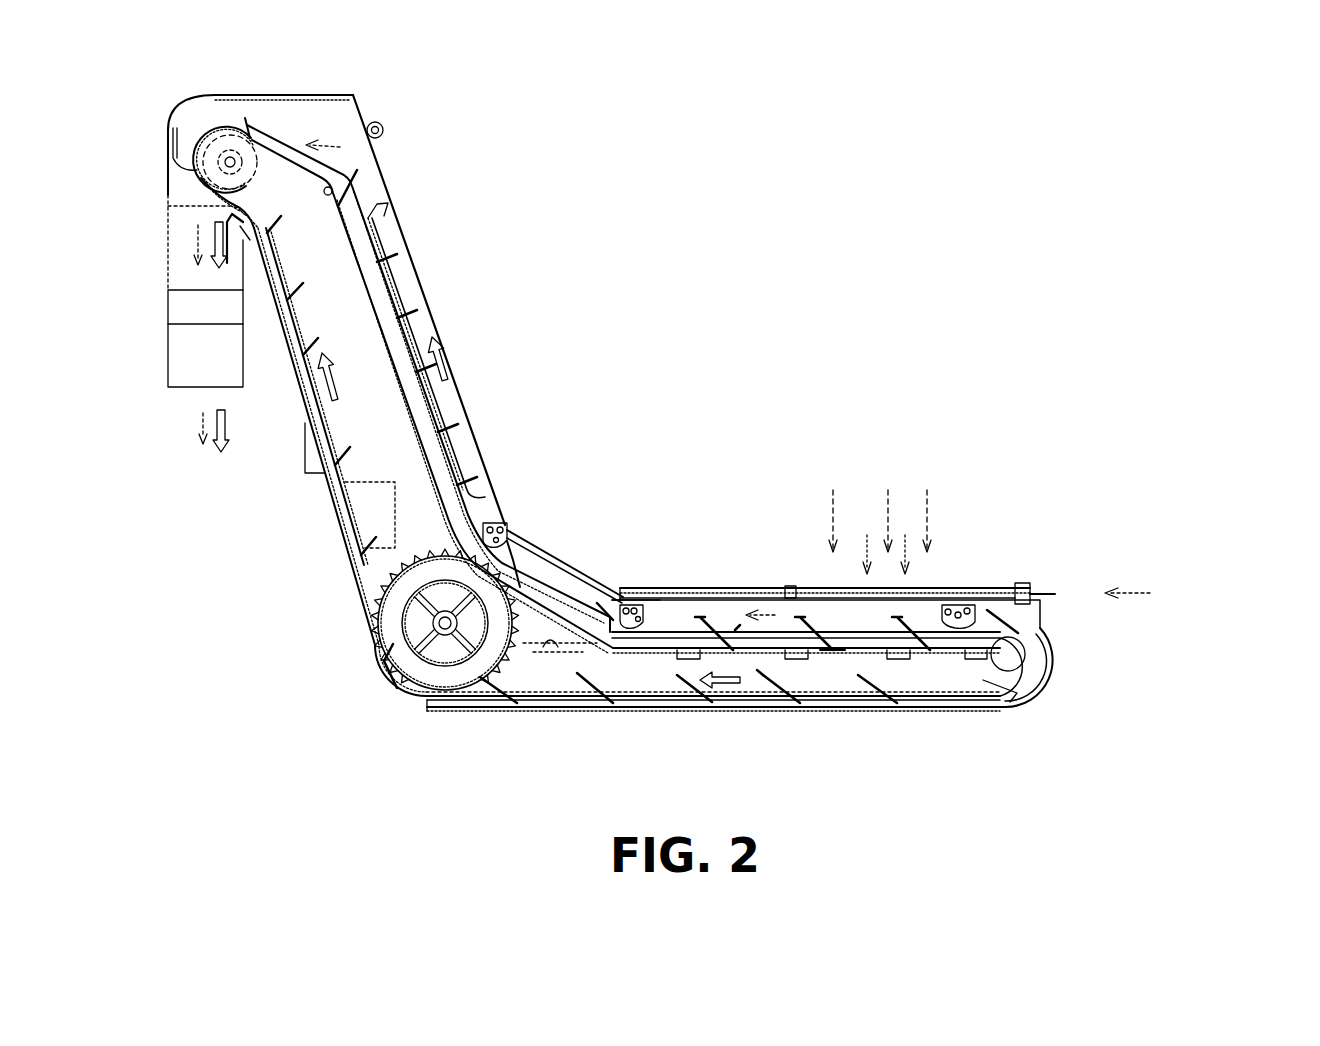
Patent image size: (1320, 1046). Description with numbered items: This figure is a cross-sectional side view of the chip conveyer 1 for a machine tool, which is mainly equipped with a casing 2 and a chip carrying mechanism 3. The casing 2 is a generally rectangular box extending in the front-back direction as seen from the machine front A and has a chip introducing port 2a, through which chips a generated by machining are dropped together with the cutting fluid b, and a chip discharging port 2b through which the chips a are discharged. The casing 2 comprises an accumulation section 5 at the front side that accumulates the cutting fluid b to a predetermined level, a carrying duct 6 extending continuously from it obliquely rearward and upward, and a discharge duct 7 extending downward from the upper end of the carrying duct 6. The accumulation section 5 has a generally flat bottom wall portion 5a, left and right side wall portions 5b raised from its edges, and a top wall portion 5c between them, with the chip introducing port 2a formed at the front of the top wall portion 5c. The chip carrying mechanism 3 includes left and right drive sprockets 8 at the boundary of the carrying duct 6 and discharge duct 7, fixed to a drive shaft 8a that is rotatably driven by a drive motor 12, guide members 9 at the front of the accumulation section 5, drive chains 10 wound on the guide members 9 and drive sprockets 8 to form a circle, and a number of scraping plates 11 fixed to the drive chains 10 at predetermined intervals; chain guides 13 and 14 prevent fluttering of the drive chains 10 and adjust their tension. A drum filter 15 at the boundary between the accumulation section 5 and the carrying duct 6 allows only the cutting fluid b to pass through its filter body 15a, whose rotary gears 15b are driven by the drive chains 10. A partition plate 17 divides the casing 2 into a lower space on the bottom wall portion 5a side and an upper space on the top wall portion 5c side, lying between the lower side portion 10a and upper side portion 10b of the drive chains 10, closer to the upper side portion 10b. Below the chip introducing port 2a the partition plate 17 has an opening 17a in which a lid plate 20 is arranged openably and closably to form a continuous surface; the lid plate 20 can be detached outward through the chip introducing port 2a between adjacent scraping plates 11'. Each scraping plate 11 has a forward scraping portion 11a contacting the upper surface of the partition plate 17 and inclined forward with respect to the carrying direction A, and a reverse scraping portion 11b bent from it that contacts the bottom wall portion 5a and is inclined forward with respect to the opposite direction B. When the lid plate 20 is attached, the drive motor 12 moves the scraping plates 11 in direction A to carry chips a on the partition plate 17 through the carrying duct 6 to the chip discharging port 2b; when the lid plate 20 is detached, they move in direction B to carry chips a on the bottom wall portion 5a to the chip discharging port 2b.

The chip conveyer 1 is at (1003, 432).
The casing 2 is at (463, 318).
The chip introducing port 2a is at (832, 588).
The chip discharging port 2b is at (183, 173).
The chip carrying mechanism 3 is at (566, 583).
The accumulation section 5 is at (748, 592).
The bottom wall portion 5a is at (928, 688).
The side wall portion 5b is at (962, 670).
The top wall portion 5c is at (645, 600).
The carrying duct 6 is at (455, 393).
The discharge duct 7 is at (166, 300).
The drive sprocket 8 is at (226, 207).
The drive shaft 8a is at (230, 155).
The guide member 9 is at (1042, 692).
The drive chain 10 is at (545, 562).
The lower side portion 10a is at (590, 700).
The upper side portion 10b is at (585, 585).
The scraping plate 11 is at (582, 469).
The adjacent scraping plates 11' is at (785, 578).
The forward scraping portion 11a is at (735, 625).
The reverse scraping portion 11b is at (712, 620).
The drive motor 12 is at (293, 165).
The chain guide 13 is at (406, 290).
The chain guide 14 is at (497, 523).
The drum filter 15 is at (423, 667).
The filter body 15a is at (440, 670).
The rotary gear 15b is at (507, 660).
The partition plate 17 is at (650, 655).
The opening 17a is at (805, 663).
The lid plate 20 is at (832, 655).
The carrying direction A is at (452, 352).
The opposite direction B is at (313, 397).
The chips a is at (925, 490).
The cutting fluid b is at (905, 545).